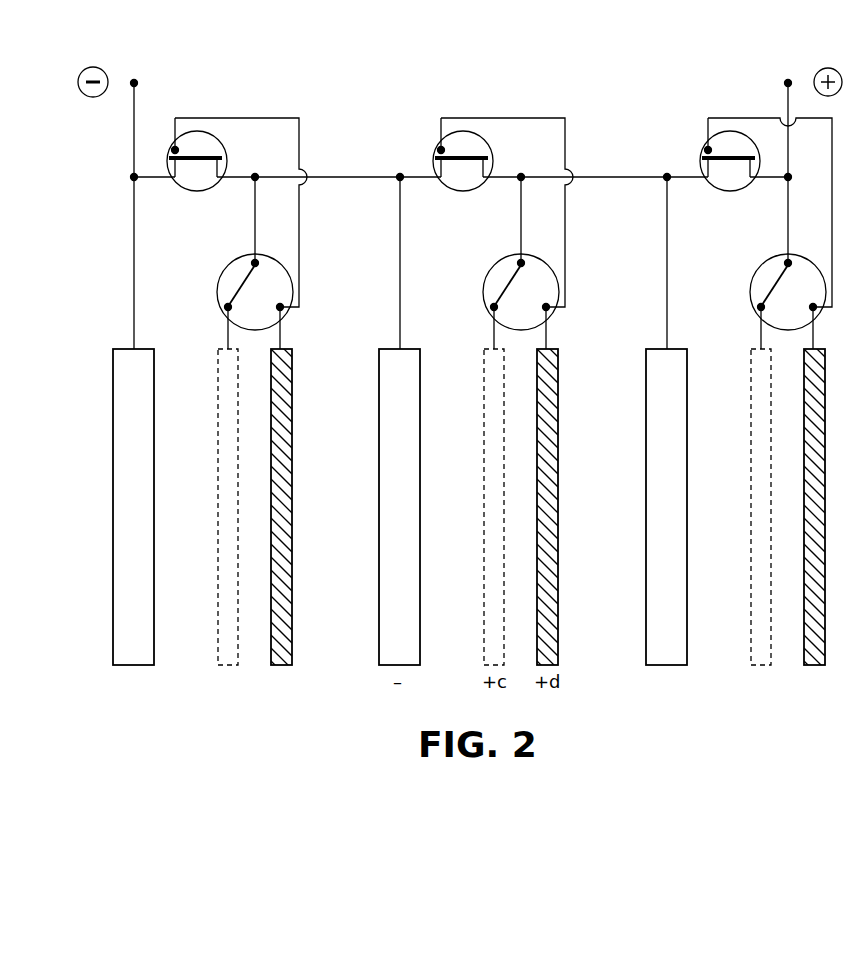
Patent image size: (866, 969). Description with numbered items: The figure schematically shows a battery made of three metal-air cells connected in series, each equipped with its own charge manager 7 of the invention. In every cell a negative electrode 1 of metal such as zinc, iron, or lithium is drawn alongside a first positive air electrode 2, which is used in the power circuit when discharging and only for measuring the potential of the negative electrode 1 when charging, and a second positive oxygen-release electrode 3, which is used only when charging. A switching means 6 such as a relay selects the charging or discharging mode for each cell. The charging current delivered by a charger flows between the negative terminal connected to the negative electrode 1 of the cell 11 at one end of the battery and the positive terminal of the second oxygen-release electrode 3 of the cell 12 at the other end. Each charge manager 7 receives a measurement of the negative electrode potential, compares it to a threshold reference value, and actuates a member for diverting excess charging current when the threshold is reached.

The negative electrode 1 is at (113, 397).
The first positive air electrode 2 is at (282, 652).
The second positive oxygen-release electrode 3 is at (228, 656).
The switching means 6 is at (264, 285).
The charge manager 7 is at (167, 160).
The cell located at one end of the battery 11 is at (155, 698).
The cell located at the other end of the battery 12 is at (718, 698).